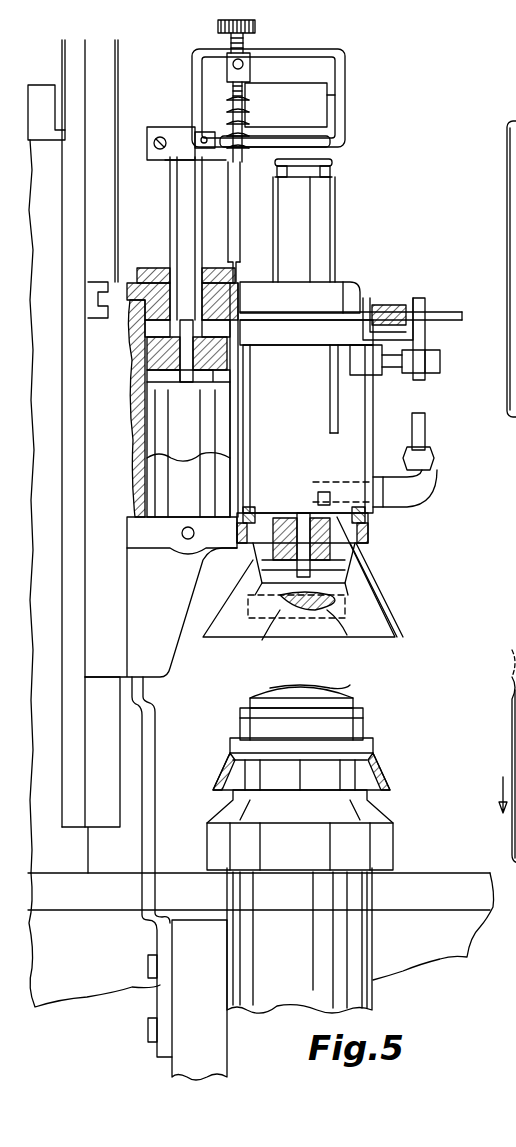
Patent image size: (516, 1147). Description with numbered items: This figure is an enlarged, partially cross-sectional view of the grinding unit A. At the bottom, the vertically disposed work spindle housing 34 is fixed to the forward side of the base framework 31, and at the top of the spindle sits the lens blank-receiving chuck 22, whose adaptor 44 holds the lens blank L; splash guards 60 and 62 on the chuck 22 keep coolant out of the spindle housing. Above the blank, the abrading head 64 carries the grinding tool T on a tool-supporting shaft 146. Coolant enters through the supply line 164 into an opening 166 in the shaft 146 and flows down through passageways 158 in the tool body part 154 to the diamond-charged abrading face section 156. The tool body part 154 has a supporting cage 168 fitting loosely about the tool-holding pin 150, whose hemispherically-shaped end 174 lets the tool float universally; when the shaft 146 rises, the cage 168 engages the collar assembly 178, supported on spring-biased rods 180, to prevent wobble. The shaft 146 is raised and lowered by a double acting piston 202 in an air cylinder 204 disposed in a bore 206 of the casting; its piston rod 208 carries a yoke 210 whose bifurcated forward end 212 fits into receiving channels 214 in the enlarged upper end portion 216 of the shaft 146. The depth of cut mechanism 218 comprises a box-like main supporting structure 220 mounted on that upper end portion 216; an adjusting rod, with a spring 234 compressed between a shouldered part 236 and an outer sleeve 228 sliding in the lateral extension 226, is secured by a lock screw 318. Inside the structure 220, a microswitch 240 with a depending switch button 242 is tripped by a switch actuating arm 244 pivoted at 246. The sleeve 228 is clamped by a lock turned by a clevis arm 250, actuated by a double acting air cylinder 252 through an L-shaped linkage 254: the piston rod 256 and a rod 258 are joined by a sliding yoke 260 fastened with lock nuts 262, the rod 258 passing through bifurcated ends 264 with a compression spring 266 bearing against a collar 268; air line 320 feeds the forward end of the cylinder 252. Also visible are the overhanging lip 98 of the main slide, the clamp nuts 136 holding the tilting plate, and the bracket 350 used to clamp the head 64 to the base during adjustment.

The overhanging lip 98 is at (44, 90).
The clamp nuts 136 is at (104, 318).
The box-like main supporting structure 220 is at (338, 52).
The switch button 242 is at (300, 125).
The microswitch 240 is at (328, 95).
The depth of cut mechanism 218 is at (365, 102).
The lock screw 318 is at (242, 60).
The shouldered part 236 is at (243, 100).
The spring 234 is at (228, 112).
The pivot 246 is at (198, 130).
The switch actuating arm 244 is at (332, 140).
The bifurcated forward end 212 is at (334, 162).
The enlarged upper end portion 216 is at (332, 172).
The receiving channels 214 is at (300, 182).
The yoke 210 is at (190, 172).
The piston rod 208 is at (176, 212).
The outer sleeve 228 is at (260, 222).
The lateral extension 226 is at (280, 280).
The clevis arm 250 is at (256, 300).
The L-shaped linkage 254 is at (455, 316).
The rod 258 is at (298, 328).
The double acting air cylinder 252 is at (304, 375).
The line 320 is at (338, 420).
The opening 166 is at (316, 488).
The bifurcated ends 264 is at (366, 296).
The compression spring 266 is at (392, 303).
The collar 268 is at (408, 298).
The sliding yoke 260 is at (460, 273).
The abrading head 64 is at (364, 265).
The lock nuts 262 is at (442, 362).
The piston rod 256 is at (388, 370).
The supply line 164 is at (426, 425).
The unit A is at (450, 497).
The double acting piston 202 is at (140, 378).
The bore 206 is at (136, 408).
The air cylinder 204 is at (140, 436).
The collar assembly 178 is at (232, 548).
The bracket 350 is at (150, 728).
The tool-supporting shaft 146 is at (370, 540).
The spring-biased rods 180 is at (250, 520).
The tool-holding pin 150 is at (345, 562).
The supporting cage 168 is at (352, 572).
The body part 154 is at (262, 570).
The diamond-charged abrading face section 156 is at (345, 610).
The grinding tool T is at (340, 590).
The hemispherically-shaped end 174 is at (262, 637).
The passageways 158 is at (347, 637).
The lens blank L is at (315, 679).
The adaptor 44 is at (365, 720).
The lens blank-receiving chuck 22 is at (388, 760).
The splash guard 60 is at (392, 780).
The splash guard 62 is at (393, 840).
The work spindle housing 34 is at (352, 975).
The base framework 31 is at (82, 904).